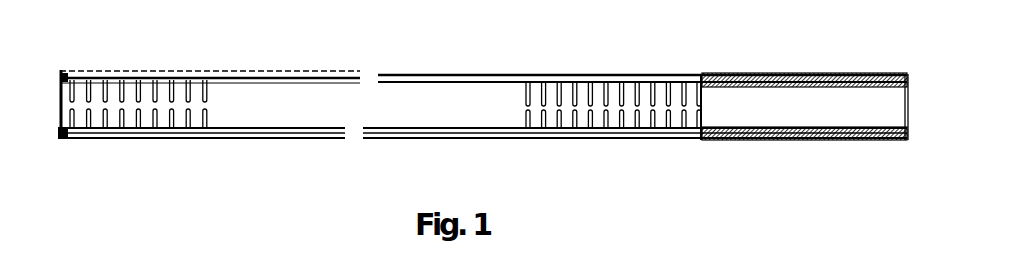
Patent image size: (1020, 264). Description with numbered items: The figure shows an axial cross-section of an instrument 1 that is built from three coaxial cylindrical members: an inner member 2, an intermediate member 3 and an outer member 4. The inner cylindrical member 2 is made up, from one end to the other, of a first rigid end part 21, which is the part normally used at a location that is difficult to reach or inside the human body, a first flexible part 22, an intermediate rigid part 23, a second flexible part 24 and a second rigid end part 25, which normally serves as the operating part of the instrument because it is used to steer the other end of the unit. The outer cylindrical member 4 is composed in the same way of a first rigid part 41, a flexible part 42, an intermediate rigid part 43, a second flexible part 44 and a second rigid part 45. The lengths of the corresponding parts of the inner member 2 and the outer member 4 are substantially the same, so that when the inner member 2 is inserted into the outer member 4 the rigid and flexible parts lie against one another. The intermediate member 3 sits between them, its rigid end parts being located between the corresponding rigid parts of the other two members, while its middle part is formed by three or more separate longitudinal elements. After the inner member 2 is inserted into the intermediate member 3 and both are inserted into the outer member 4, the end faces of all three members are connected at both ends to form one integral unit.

The instrument 1 is at (457, 70).
The inner member 2 is at (303, 122).
The intermediate member 3 is at (385, 142).
The outer member 4 is at (455, 142).
The first rigid end part 21 is at (63, 86).
The first flexible part 22 is at (162, 80).
The intermediate rigid part 23 is at (275, 84).
The second flexible part 24 is at (624, 90).
The second rigid end part 25 is at (762, 88).
The first rigid part 41 is at (63, 141).
The flexible part 42 is at (167, 134).
The intermediate rigid part 43 is at (420, 142).
The second flexible part 44 is at (632, 142).
The second rigid part 45 is at (762, 142).